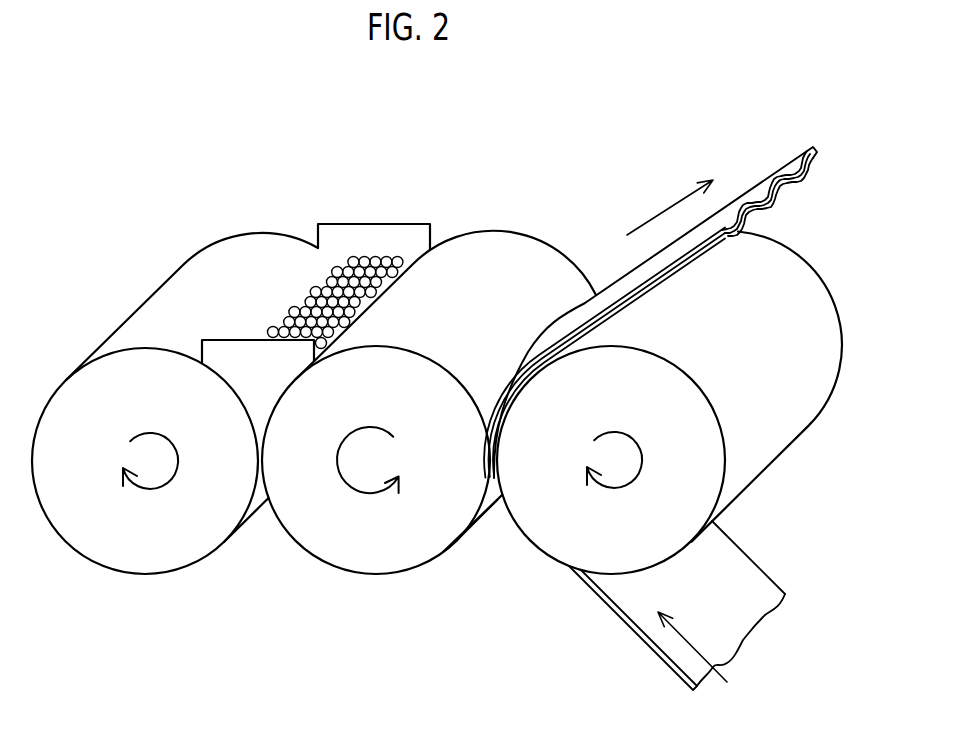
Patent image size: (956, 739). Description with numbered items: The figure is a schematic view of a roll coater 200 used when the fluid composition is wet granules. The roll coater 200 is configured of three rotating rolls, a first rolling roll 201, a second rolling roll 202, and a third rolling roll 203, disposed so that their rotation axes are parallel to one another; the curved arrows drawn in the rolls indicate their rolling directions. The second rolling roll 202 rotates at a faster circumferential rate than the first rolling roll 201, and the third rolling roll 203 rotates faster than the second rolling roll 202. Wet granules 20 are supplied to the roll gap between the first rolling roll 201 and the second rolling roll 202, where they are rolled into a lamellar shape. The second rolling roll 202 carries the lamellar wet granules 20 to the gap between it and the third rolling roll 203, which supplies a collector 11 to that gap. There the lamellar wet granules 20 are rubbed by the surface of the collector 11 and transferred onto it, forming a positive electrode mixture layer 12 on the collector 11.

The roll coater 200 is at (144, 156).
The first rolling roll 201 is at (258, 240).
The second rolling roll 202 is at (486, 241).
The third rolling roll 203 is at (808, 283).
The wet granules 20 is at (354, 270).
The collector 11 is at (817, 170).
The positive electrode mixture layer 12 is at (755, 192).